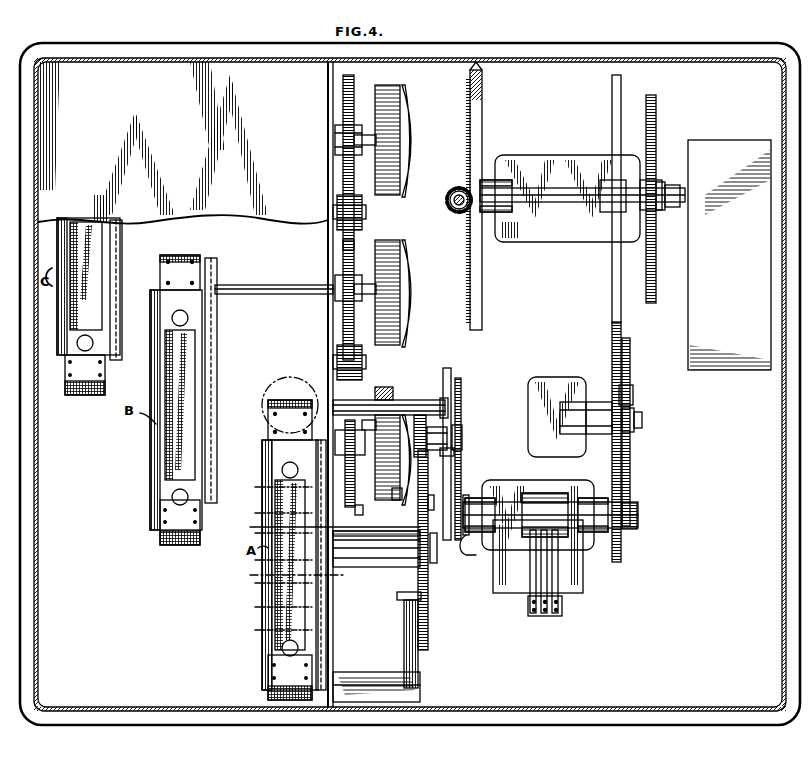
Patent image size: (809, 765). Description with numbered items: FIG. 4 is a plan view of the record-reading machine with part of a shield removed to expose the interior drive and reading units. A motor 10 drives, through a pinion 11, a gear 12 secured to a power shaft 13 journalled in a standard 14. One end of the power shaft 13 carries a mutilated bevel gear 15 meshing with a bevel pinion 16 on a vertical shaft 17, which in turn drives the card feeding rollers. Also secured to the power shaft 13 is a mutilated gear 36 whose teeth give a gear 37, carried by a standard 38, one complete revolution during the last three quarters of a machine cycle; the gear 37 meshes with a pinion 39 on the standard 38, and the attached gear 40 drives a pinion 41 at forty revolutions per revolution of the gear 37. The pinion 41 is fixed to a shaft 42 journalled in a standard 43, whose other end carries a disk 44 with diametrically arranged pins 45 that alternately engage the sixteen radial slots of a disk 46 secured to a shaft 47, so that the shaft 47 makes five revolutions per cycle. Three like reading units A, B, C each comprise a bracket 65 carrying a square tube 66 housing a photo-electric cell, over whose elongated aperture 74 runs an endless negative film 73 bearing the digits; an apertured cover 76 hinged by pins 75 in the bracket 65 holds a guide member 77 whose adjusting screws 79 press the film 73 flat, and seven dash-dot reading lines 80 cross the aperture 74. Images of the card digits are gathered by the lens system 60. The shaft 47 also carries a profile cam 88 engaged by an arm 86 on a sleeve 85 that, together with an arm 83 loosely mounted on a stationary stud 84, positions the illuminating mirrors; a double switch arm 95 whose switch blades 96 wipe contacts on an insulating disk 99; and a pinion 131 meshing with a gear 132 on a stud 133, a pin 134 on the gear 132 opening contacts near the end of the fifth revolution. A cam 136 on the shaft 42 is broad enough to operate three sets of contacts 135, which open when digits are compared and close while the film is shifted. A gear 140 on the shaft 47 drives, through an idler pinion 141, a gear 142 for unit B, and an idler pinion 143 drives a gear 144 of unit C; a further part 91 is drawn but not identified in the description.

The motor 10 is at (702, 311).
The pinion 11 is at (652, 220).
The gear 12 is at (657, 127).
The power shaft 13 is at (542, 215).
The standard 14 is at (566, 228).
The mutilated bevel gear 15 is at (483, 133).
The bevel pinion 16 is at (452, 193).
The vertical shaft 17 is at (459, 207).
The mutilated gear 36 is at (612, 284).
The gear 37 is at (633, 392).
The standard 38 is at (582, 384).
The pinion 39 is at (608, 446).
The gear 40 is at (631, 372).
The pinion 41 is at (638, 518).
The shaft 42 is at (507, 513).
The standard 43 is at (588, 540).
The disk 44 is at (470, 535).
The pins 45 is at (439, 512).
The disk 46 is at (452, 382).
The shaft 47 is at (352, 446).
The lens system 60 is at (282, 384).
The bracket 65 is at (122, 245).
The square tube 66 is at (160, 330).
The negative film 73 is at (80, 395).
The elongated aperture 74 is at (307, 576).
The pins 75 is at (327, 637).
The apertured cover 76 is at (58, 247).
The guide member 77 is at (70, 312).
The adjusting screws 79 is at (282, 470).
The reading lines 80 is at (274, 560).
The arm 83 is at (385, 386).
The stationary stud 84 is at (449, 406).
The sleeve 85 is at (422, 401).
The arm 86 is at (448, 427).
The profile cam 88 is at (462, 476).
The pin 91 is at (366, 425).
The double switch arm 95 is at (407, 500).
The switch blade 96 is at (402, 498).
The disk of insulation 99 is at (385, 472).
The pinion 131 is at (455, 453).
The gear 132 is at (429, 612).
The stud 133 is at (437, 562).
The pin 134 is at (410, 592).
The contacts 135 is at (533, 558).
The cam 136 is at (550, 497).
The gear 140 is at (350, 517).
The idler pinion 141 is at (362, 362).
The gear 142 is at (350, 335).
The idler pinion 143 is at (362, 212).
The gear 144 is at (352, 90).